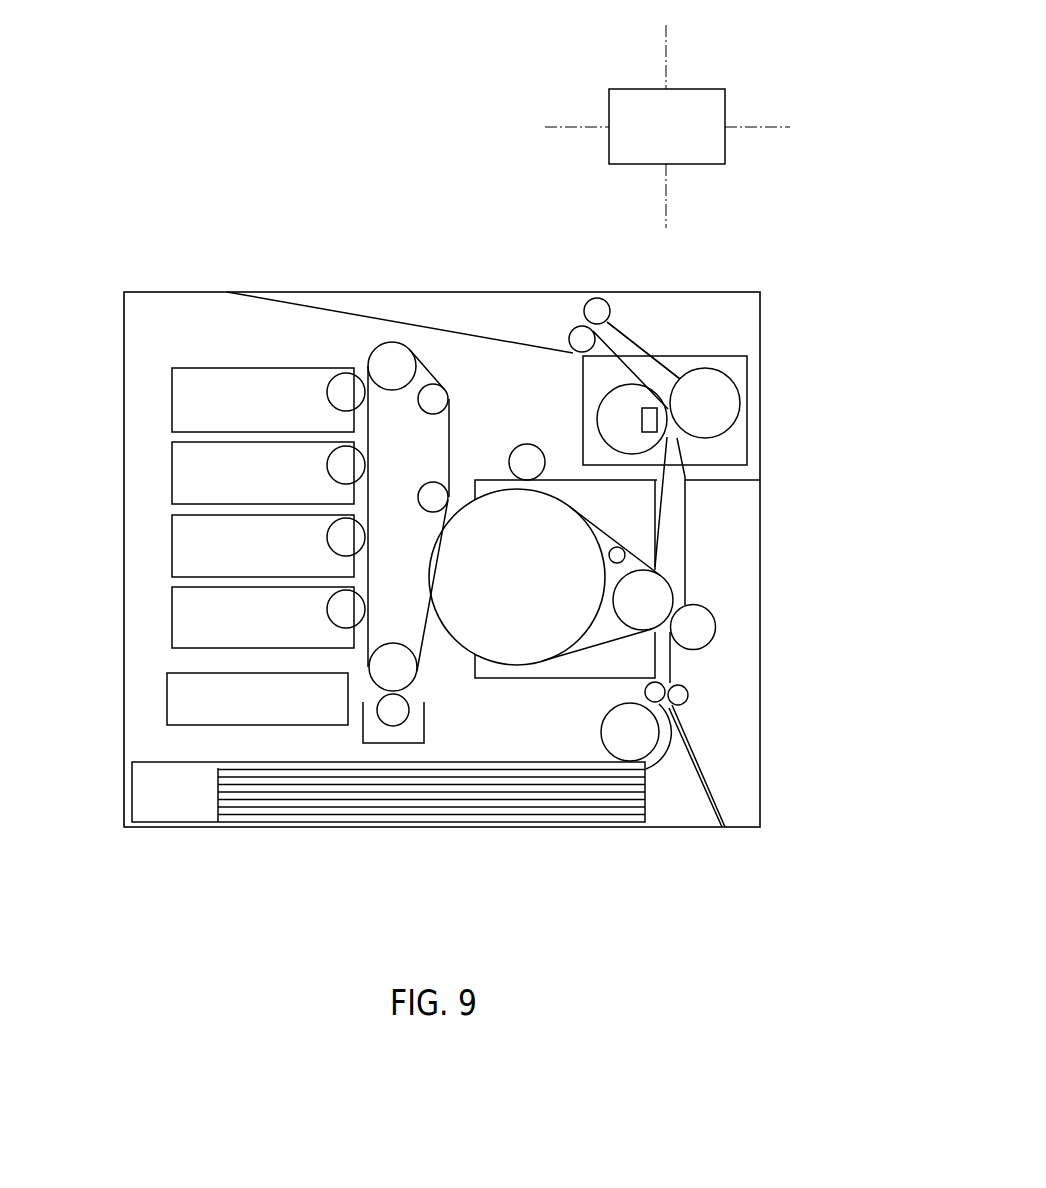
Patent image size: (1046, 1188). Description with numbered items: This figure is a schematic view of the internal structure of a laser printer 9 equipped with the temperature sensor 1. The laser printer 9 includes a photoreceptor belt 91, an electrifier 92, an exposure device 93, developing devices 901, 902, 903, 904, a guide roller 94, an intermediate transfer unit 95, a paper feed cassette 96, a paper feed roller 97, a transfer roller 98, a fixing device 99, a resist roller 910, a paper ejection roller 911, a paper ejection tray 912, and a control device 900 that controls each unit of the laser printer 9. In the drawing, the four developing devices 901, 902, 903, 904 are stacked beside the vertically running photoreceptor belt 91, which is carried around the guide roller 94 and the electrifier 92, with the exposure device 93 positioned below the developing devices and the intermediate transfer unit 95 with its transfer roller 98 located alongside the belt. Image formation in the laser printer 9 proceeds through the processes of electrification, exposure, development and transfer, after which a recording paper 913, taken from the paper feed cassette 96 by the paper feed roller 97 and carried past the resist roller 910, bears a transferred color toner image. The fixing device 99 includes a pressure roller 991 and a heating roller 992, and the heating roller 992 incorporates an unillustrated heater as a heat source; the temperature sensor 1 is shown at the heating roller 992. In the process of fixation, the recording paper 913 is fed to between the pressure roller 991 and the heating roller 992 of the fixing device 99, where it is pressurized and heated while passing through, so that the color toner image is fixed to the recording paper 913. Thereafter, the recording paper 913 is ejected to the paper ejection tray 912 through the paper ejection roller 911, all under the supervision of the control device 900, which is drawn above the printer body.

The laser printer 9 is at (179, 199).
The control device 900 is at (702, 88).
The developing device 901 is at (172, 404).
The developing device 902 is at (172, 479).
The developing device 903 is at (172, 552).
The developing device 904 is at (172, 623).
The exposure device 93 is at (167, 697).
The photoreceptor belt 91 is at (392, 342).
The guide roller 94 is at (420, 678).
The electrifier 92 is at (393, 727).
The paper ejection tray 912 is at (483, 338).
The paper ejection roller 911 is at (603, 298).
The fixing device 99 is at (747, 420).
The pressure roller 991 is at (725, 373).
The heating roller 992 is at (602, 392).
The temperature sensor 1 is at (646, 406).
The intermediate transfer unit 95 is at (568, 678).
The transfer roller 98 is at (718, 628).
The resist roller 910 is at (689, 695).
The paper feed roller 97 is at (653, 752).
The paper feed cassette 96 is at (183, 808).
The recording paper 913 is at (300, 813).